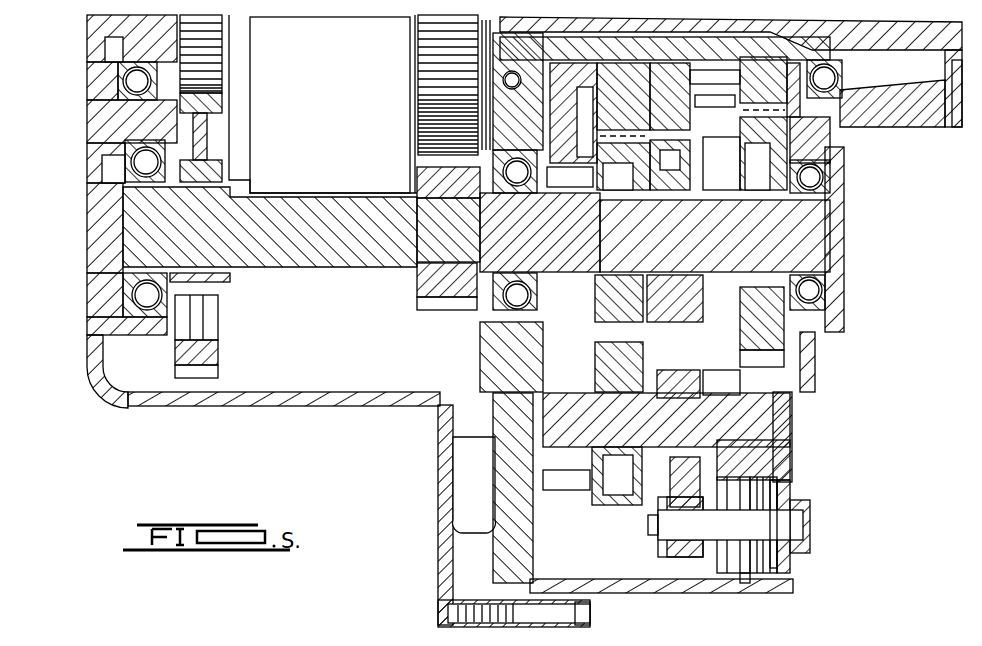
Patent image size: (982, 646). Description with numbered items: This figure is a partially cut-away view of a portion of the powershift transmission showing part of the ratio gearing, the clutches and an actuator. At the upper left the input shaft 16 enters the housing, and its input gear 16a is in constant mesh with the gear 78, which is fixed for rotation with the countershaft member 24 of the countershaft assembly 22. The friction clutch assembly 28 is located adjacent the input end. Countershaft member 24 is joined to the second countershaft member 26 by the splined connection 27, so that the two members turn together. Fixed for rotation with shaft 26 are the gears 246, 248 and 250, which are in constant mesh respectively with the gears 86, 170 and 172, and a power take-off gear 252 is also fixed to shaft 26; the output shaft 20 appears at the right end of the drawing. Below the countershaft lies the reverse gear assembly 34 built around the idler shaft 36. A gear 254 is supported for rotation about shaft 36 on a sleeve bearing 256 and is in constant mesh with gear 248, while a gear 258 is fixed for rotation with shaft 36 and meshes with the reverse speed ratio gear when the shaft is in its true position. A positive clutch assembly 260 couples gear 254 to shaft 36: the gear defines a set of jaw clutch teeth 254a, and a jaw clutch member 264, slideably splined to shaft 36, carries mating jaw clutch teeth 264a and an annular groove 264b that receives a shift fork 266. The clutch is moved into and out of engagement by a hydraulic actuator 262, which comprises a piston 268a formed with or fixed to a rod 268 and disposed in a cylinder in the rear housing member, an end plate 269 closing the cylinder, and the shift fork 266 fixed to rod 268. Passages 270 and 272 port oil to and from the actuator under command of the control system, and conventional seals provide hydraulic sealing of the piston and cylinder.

The input shaft 16 is at (87, 27).
The input gear 16a is at (230, 88).
The friction clutch assembly 28 is at (333, 106).
The gear 86 is at (418, 147).
The countershaft member 24 is at (327, 268).
The splined connection 27 is at (455, 252).
The gear 246 is at (450, 309).
The gear 78 is at (218, 355).
The countershaft assembly 22 is at (344, 300).
The gear 170 is at (592, 160).
The power take-off gear 252 is at (700, 135).
The gear 172 is at (822, 127).
The output shaft 20 is at (947, 106).
The countershaft member 26 is at (553, 286).
The gear 248 is at (592, 330).
The gear 254 is at (600, 339).
The gear 258 is at (537, 358).
The annular groove 264b is at (680, 372).
The positive clutch assembly 260 is at (687, 364).
The gear 250 is at (782, 354).
The jaw clutch member 264 is at (702, 378).
The idler shaft 36 is at (453, 423).
The sleeve bearing 256 is at (592, 398).
The jaw clutch teeth 254a is at (648, 445).
The jaw clutch teeth 264a is at (614, 492).
The reverse gear assembly 34 is at (618, 543).
The shift fork 266 is at (706, 485).
The piston 268a is at (790, 482).
The end plate 269 is at (719, 526).
The rod 268 is at (707, 551).
The hydraulic actuator 262 is at (812, 556).
The passage 270 is at (745, 584).
The passage 272 is at (778, 590).